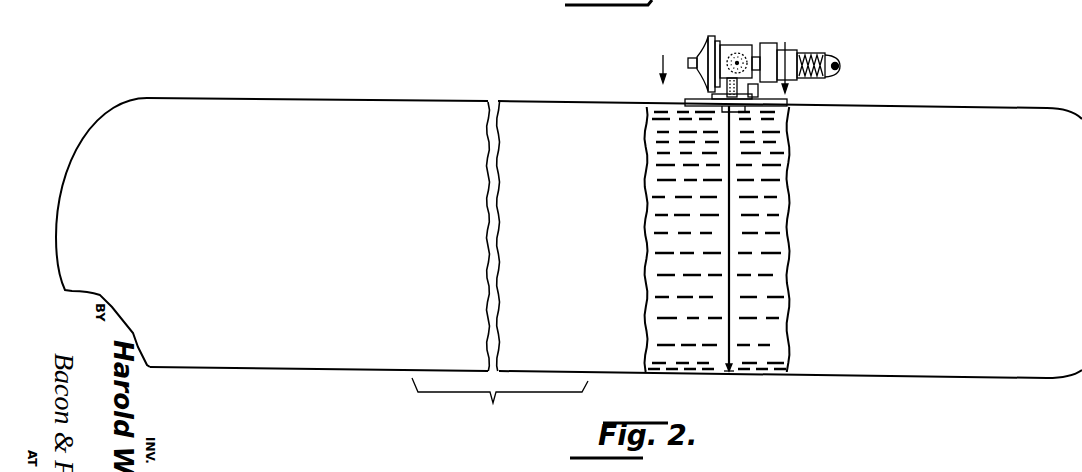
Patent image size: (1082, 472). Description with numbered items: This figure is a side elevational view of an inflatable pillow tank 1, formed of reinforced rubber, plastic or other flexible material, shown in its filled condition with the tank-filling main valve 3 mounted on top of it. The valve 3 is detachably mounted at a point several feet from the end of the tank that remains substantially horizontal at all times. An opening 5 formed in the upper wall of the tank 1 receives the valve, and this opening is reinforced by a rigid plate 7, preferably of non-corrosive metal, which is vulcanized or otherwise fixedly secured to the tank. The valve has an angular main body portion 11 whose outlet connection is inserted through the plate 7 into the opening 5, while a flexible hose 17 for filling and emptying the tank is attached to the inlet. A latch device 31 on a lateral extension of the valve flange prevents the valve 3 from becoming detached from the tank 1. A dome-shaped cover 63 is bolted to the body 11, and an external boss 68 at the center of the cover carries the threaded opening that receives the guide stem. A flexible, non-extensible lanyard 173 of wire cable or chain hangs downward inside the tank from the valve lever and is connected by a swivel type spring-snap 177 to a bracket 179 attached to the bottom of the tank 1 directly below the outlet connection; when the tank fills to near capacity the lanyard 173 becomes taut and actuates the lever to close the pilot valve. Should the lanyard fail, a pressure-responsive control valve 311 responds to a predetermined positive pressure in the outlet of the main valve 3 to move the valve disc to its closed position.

The inflatable pillow tank 1 is at (527, 100).
The tank-filling main valve 3 is at (733, 34).
The opening 5 is at (742, 114).
The plate 7 is at (703, 99).
The main body portion 11 is at (748, 40).
The flexible hose 17 is at (823, 62).
The latch device 31 is at (758, 89).
The dome-shaped cover 63 is at (705, 50).
The external boss 68 is at (688, 61).
The lanyard 173 is at (728, 196).
The swivel type spring-snap 177 is at (726, 366).
The bracket 179 is at (731, 371).
The pressure-responsive control valve 311 is at (729, 49).